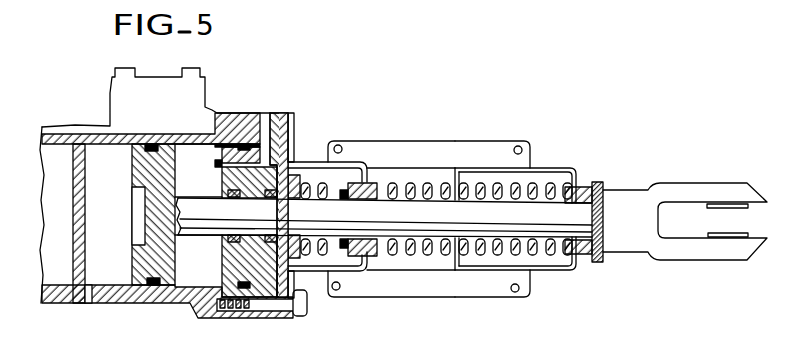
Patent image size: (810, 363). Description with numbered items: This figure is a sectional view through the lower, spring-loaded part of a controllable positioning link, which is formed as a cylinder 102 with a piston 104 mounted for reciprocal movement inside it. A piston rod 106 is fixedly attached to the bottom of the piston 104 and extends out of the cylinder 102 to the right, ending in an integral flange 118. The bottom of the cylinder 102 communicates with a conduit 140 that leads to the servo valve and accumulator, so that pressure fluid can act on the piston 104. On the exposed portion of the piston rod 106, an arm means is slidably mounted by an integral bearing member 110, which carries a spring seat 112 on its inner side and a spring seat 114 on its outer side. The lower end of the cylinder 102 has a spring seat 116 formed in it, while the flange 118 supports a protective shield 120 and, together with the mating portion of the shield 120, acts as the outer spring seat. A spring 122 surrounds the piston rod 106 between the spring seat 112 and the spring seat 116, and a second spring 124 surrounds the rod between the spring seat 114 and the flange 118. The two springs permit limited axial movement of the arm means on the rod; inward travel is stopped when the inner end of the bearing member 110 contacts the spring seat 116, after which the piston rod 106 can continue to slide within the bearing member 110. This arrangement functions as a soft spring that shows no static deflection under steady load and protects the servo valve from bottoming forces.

The cylinder 102 is at (292, 320).
The piston 104 is at (140, 162).
The piston rod 106 is at (308, 216).
The integral bearing member 110 is at (325, 200).
The spring seat 112 is at (336, 273).
The spring seat 114 is at (384, 250).
The spring seat 116 is at (290, 246).
The integral flange 118 is at (590, 262).
The protective shield 120 is at (560, 170).
The spring 122 is at (316, 195).
The spring 124 is at (412, 197).
The conduit 140 is at (265, 125).